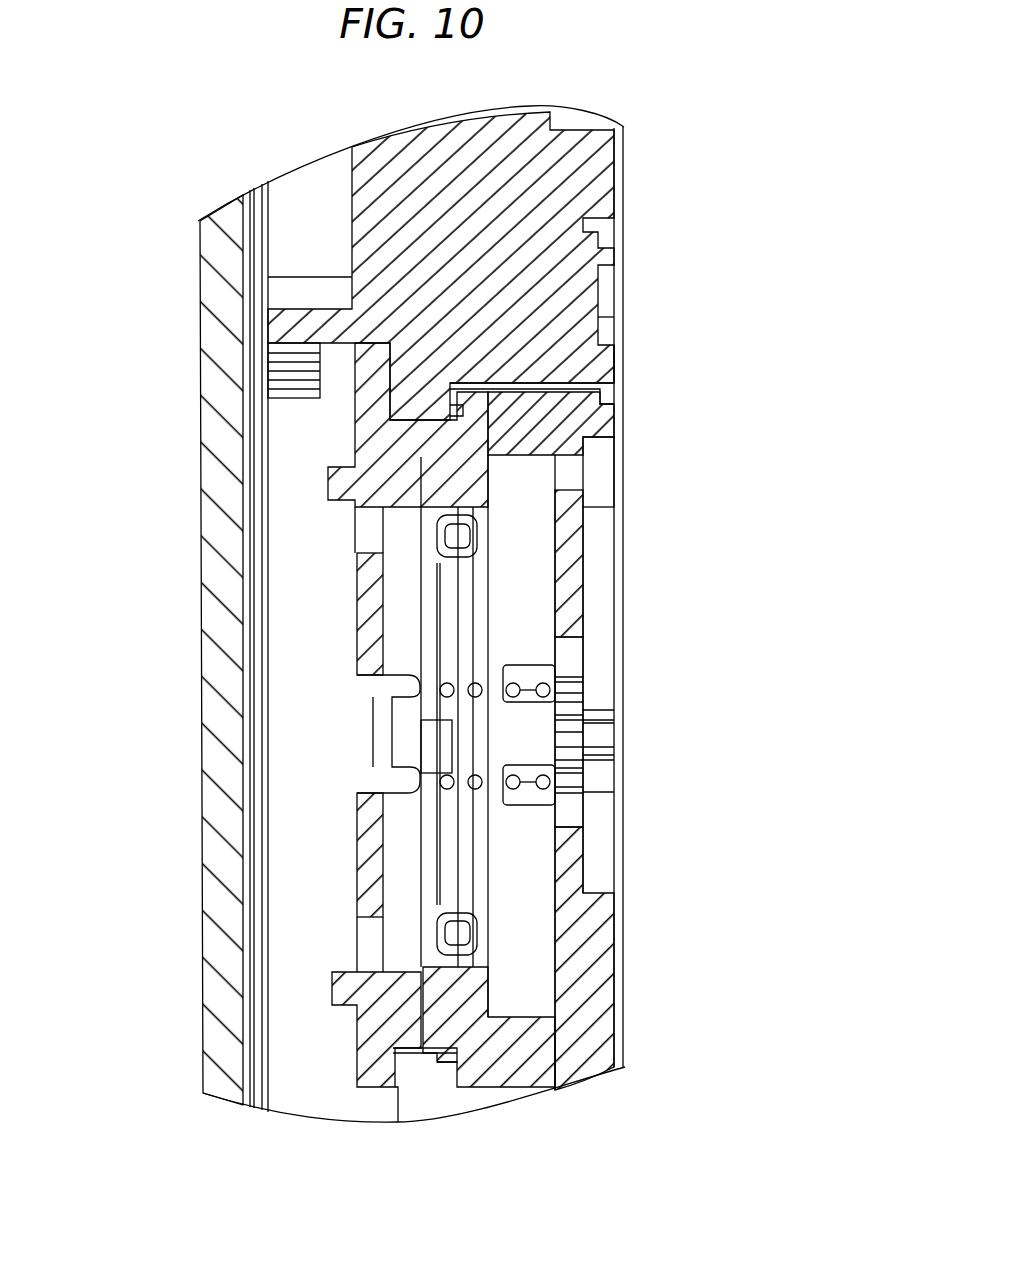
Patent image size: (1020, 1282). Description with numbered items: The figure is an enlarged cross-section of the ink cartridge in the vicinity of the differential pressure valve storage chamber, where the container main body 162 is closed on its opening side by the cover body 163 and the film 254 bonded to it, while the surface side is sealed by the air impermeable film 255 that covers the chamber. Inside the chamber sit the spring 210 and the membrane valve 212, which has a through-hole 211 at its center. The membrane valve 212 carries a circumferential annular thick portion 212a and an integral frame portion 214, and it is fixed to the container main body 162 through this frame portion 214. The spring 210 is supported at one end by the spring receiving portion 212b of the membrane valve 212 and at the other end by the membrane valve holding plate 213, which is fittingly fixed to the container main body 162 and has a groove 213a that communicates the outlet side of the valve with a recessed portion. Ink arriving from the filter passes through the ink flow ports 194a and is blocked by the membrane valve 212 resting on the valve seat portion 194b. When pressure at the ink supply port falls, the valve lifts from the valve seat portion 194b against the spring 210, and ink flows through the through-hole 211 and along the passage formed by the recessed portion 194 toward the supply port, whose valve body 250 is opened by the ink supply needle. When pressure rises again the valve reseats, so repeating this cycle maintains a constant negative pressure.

The air impermeable film 255 is at (620, 140).
The container main body 162 is at (614, 247).
The frame portion 214 is at (566, 382).
The ink flow ports 194a is at (478, 410).
The annular thick portion 212a is at (367, 527).
The spring receiving portion 212b is at (417, 718).
The spring 210 is at (510, 687).
The through-hole 211 is at (443, 740).
The groove 213a is at (556, 780).
The membrane valve 212 is at (437, 880).
The membrane valve holding plate 213 is at (603, 987).
The cover body 163 is at (212, 540).
The valve seat portion 194b is at (400, 722).
The recessed portion 194 is at (385, 818).
The valve body 250 is at (253, 1030).
The film 254 is at (267, 1087).